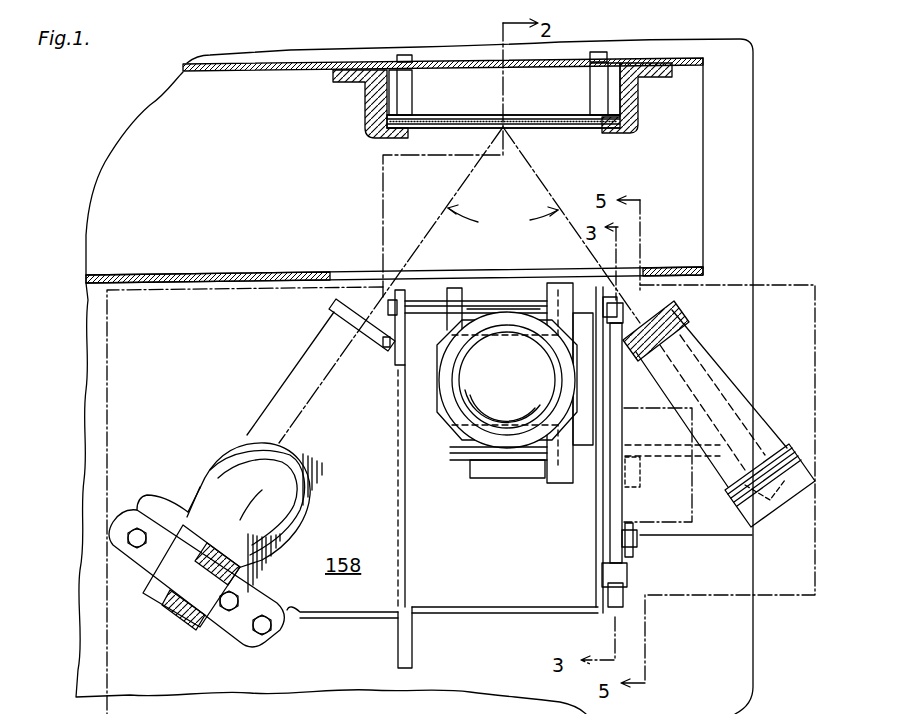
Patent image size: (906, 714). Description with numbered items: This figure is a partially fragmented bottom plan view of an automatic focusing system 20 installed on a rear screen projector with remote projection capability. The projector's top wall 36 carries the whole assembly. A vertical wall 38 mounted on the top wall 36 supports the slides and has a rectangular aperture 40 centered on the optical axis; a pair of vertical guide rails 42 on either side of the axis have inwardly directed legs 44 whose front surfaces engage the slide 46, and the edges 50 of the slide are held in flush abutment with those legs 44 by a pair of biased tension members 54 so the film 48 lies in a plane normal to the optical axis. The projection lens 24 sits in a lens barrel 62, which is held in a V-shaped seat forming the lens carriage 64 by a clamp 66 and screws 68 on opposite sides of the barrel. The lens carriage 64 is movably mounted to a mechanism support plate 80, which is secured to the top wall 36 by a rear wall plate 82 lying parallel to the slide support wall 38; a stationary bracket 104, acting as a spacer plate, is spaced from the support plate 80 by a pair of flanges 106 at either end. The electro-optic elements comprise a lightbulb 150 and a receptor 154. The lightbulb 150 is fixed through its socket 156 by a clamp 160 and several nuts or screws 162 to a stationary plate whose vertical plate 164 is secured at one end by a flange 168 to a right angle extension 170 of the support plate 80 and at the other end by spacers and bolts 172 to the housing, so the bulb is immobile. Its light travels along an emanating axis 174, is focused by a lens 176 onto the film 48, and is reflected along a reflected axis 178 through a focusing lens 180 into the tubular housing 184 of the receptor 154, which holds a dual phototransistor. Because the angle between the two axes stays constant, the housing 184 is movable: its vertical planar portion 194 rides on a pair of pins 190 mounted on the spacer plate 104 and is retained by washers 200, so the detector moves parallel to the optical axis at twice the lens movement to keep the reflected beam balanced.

The automatic focusing system 20 is at (766, 270).
The projection lens 24 is at (467, 482).
The top wall 36 is at (414, 376).
The vertical wall 38 is at (300, 60).
The rectangular aperture 40 is at (440, 60).
The vertical guide rails 42 is at (368, 103).
The inwardly directed legs 44 is at (403, 136).
The slide 46 is at (561, 109).
The film 48 is at (437, 117).
The edges of the slide 50 is at (470, 127).
The biased tension members 54 is at (404, 100).
The lens barrel 62 is at (456, 418).
The lens carriage 64 is at (553, 283).
The clamp 66 is at (437, 373).
The screws 68 is at (493, 301).
The mechanism support plate 80 is at (596, 530).
The rear wall plate 82 is at (278, 275).
The stationary bracket 104 is at (627, 573).
The flanges 106 is at (617, 307).
The lightbulb 150 is at (222, 455).
The receptor 154 is at (760, 410).
The socket 156 is at (178, 620).
The clamp 160 is at (170, 595).
The nuts or screws 162 is at (148, 560).
The vertical plate 164 is at (407, 596).
The flange 168 is at (397, 648).
The right angle extension 170 is at (514, 607).
The spacers and bolts 172 is at (425, 302).
The emanating axis 174 is at (333, 363).
The lens 176 is at (357, 298).
The reflected axis 178 is at (546, 173).
The focusing lens 180 is at (689, 318).
The tubular housing 184 is at (657, 373).
The pins 190 is at (640, 470).
The vertical planar portion 194 is at (620, 505).
The washers 200 is at (633, 527).